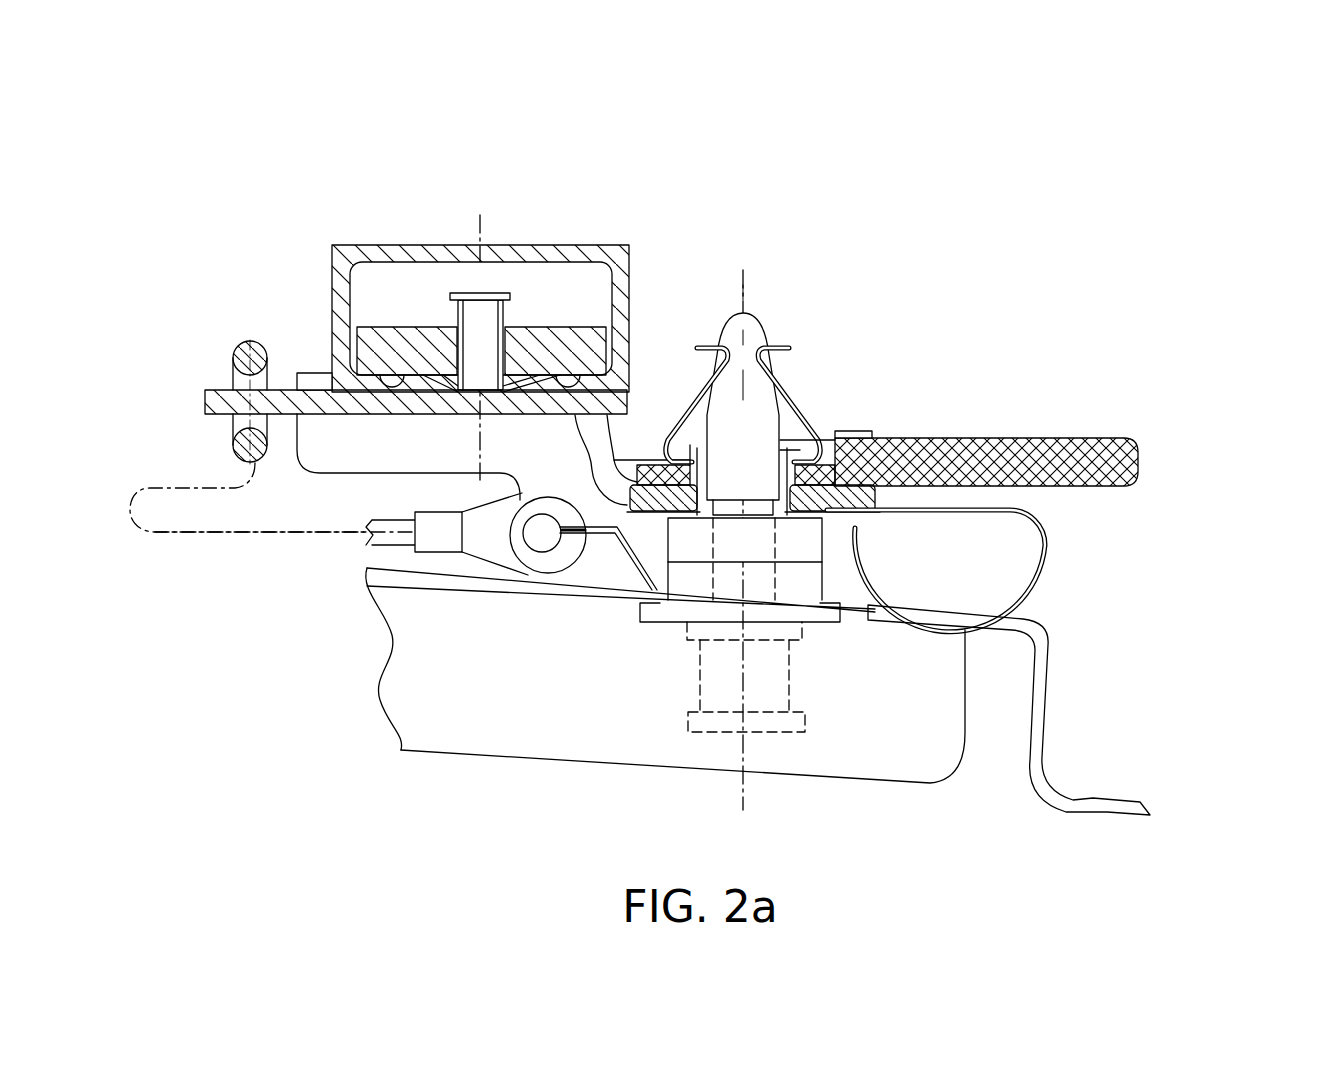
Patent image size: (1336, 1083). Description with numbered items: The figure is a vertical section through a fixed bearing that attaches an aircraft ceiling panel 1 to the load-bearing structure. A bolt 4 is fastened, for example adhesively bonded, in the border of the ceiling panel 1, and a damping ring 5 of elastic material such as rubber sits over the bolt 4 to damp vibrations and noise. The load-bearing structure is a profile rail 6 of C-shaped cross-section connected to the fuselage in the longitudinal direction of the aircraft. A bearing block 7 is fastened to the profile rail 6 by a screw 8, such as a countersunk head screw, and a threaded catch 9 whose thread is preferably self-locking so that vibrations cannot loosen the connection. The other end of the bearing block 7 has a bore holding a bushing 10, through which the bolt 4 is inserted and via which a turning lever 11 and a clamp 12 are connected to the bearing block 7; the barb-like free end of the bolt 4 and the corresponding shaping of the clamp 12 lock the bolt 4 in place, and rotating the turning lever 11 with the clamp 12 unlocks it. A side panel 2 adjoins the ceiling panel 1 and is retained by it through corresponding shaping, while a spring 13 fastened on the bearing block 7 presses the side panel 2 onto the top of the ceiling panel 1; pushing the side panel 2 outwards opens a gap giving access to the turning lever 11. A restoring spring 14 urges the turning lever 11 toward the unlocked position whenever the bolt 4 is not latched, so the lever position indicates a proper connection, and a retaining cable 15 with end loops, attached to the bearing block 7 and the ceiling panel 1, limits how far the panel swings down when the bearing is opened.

The ceiling panel 1 is at (479, 686).
The side panel 2 is at (1083, 797).
The bolt 4 is at (759, 416).
The damping ring 5 is at (800, 545).
The profile rail 6 is at (452, 253).
The bearing block 7 is at (440, 443).
The screw 8 is at (468, 317).
The threaded catch 9 is at (410, 347).
The bushing 10 is at (697, 478).
The turning lever 11 is at (1002, 452).
The clamp 12 is at (797, 410).
The spring 13 is at (1030, 575).
The restoring spring 14 is at (1082, 465).
The retaining cable 15 is at (242, 360).